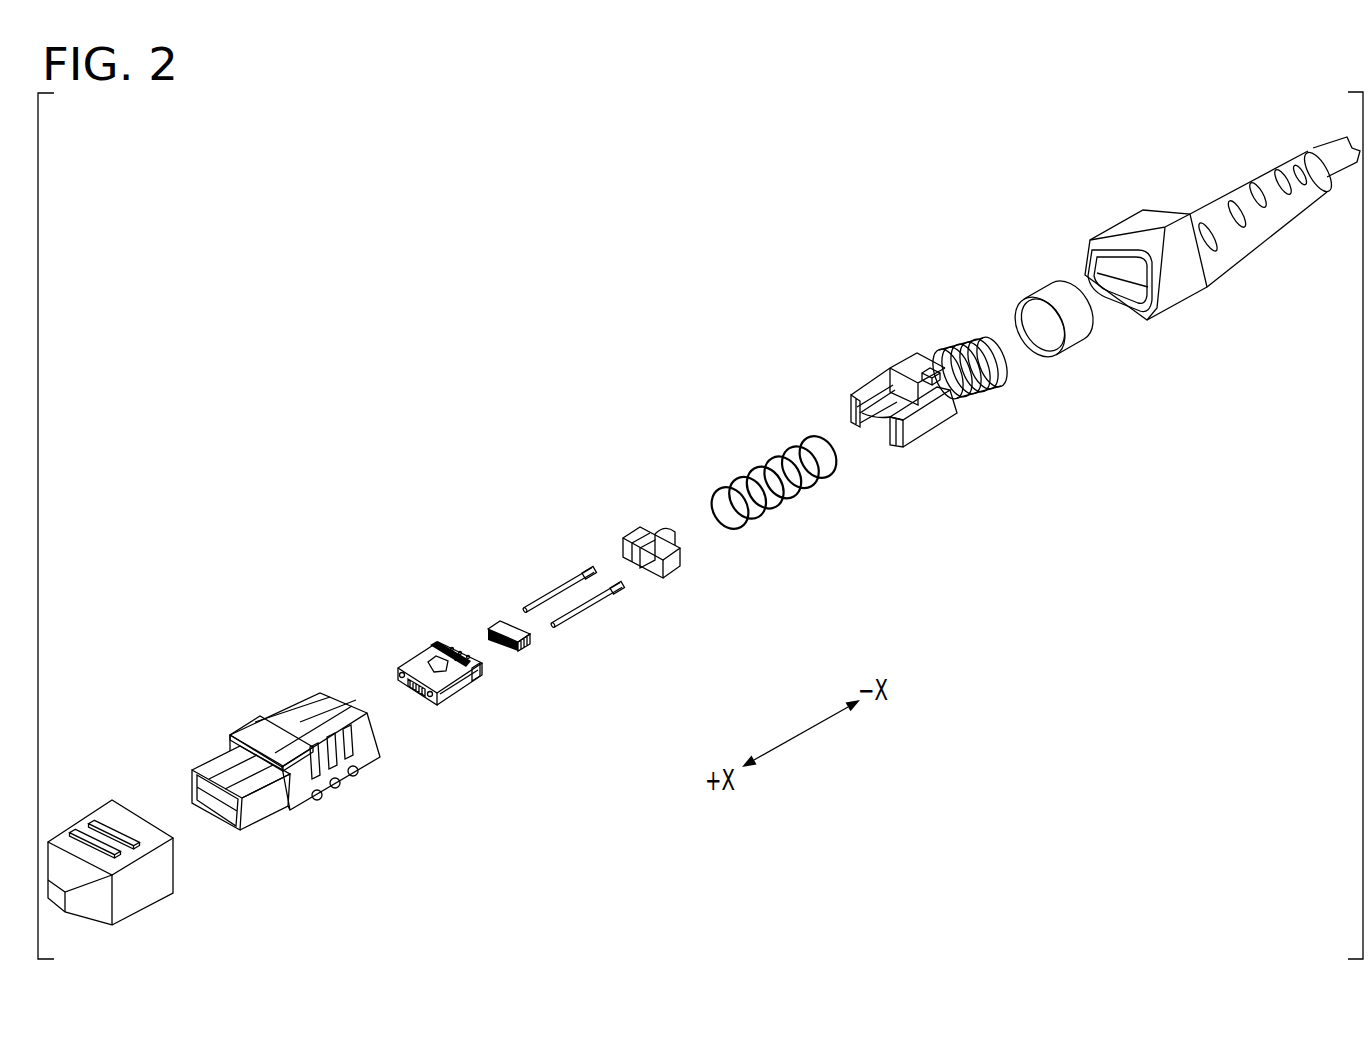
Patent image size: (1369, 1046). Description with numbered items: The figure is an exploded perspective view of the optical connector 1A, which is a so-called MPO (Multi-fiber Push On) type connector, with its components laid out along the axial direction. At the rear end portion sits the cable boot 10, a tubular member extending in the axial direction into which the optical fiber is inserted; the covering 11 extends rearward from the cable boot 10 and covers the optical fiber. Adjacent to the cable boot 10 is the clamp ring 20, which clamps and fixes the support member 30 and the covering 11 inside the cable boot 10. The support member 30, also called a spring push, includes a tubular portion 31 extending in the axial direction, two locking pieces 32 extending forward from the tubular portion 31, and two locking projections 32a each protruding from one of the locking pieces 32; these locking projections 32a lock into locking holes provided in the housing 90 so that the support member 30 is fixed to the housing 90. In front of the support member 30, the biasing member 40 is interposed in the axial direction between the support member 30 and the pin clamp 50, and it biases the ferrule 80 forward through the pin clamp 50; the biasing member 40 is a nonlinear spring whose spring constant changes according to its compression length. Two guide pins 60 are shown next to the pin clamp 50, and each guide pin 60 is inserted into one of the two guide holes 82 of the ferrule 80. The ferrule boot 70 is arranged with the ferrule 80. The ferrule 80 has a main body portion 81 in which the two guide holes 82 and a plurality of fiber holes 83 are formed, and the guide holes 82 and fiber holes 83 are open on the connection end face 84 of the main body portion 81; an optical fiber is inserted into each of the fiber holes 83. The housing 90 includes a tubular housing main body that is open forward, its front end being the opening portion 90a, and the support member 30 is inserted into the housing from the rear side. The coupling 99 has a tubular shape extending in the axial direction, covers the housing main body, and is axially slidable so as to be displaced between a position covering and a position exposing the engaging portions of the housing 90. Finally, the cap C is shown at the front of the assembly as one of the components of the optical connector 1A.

The optical connector 1A is at (395, 495).
The cable boot 10 is at (1108, 218).
The covering 11 is at (1342, 167).
The clamp ring 20 is at (1035, 282).
The support member 30 is at (942, 345).
The tubular portion 31 is at (998, 385).
The locking pieces 32 is at (935, 423).
The locking projections 32a is at (899, 448).
The biasing member 40 is at (752, 452).
The pin clamp 50 is at (627, 520).
The guide pins 60 is at (553, 578).
The ferrule boot 70 is at (525, 648).
The ferrule 80 is at (470, 690).
The main body portion 81 is at (448, 696).
The guide holes 82 is at (403, 678).
The fiber holes 83 is at (410, 692).
The connection end face 84 is at (428, 702).
The housing 90 is at (268, 827).
The opening portion 90a is at (225, 823).
The coupling 99 is at (273, 703).
The cap C is at (83, 806).